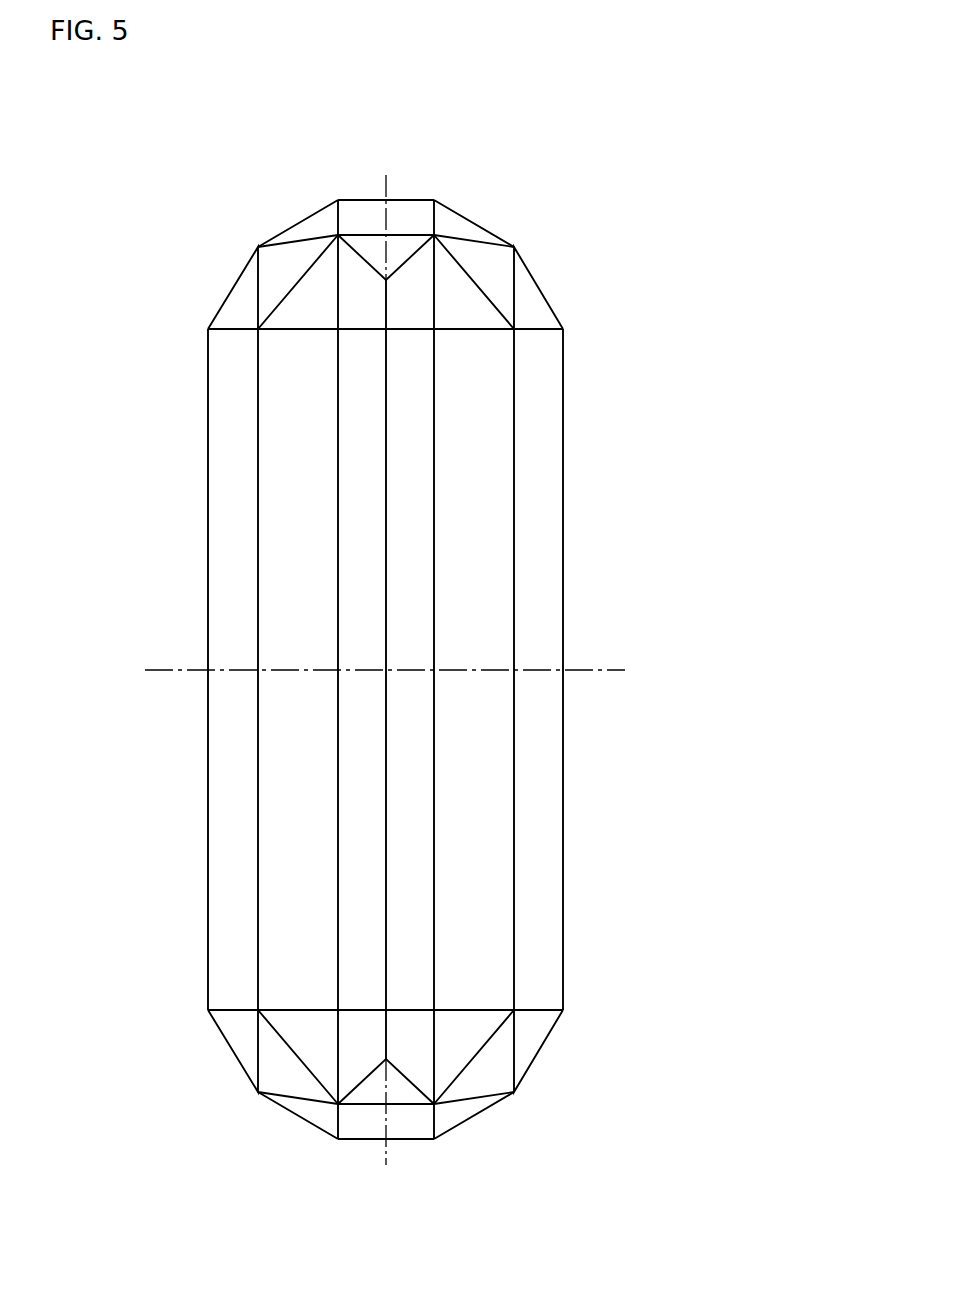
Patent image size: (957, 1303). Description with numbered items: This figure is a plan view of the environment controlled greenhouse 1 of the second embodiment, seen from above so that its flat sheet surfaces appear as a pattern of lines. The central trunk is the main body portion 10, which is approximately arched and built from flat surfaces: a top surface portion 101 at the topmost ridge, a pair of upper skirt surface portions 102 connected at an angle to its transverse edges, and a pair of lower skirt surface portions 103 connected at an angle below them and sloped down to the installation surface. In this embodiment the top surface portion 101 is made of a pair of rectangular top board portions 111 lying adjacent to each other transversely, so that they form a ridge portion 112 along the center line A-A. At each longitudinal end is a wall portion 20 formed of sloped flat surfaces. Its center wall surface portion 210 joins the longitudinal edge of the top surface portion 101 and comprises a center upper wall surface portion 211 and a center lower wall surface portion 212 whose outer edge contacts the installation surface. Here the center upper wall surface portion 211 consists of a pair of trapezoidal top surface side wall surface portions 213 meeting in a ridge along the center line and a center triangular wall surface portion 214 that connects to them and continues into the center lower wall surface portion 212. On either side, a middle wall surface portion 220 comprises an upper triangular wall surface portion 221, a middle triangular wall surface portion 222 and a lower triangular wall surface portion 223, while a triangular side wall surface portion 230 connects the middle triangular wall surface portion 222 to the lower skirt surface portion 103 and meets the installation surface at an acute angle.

The environment controlled greenhouse 1 is at (703, 55).
The main body portion 10 is at (568, 730).
The wall portion 20 is at (543, 277).
The top surface portion 101 is at (529, 669).
The upper skirt surface portion 102 is at (277, 552).
The lower skirt surface portion 103 is at (237, 627).
The top board portion 111 is at (350, 437).
The ridge portion 112 is at (387, 370).
The center wall surface portion 210 is at (562, 68).
The center upper wall surface portion 211 is at (610, 116).
The center lower wall surface portion 212 is at (402, 207).
The top surface side wall surface portion 213 is at (365, 278).
The center triangular wall surface portion 214 is at (408, 248).
The middle wall surface portion 220 is at (310, 95).
The upper triangular wall surface portion 221 is at (305, 320).
The middle triangular wall surface portion 222 is at (295, 255).
The lower triangular wall surface portion 223 is at (318, 225).
The side wall surface portion 230 is at (240, 303).